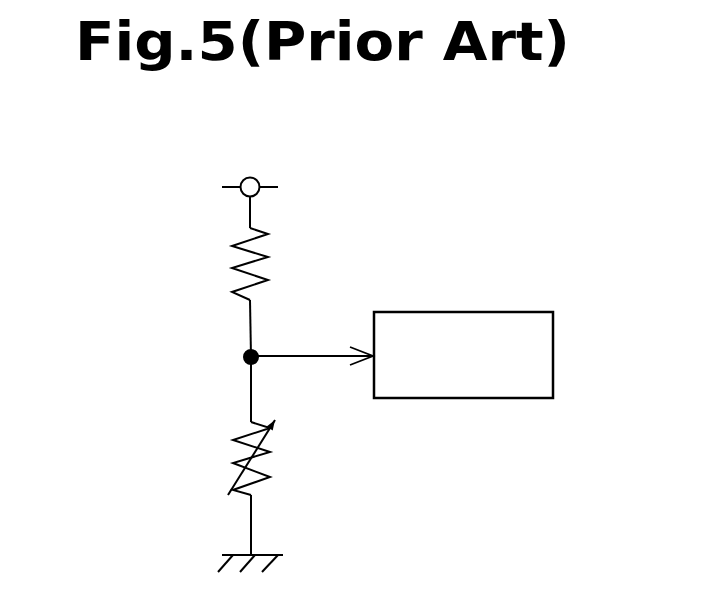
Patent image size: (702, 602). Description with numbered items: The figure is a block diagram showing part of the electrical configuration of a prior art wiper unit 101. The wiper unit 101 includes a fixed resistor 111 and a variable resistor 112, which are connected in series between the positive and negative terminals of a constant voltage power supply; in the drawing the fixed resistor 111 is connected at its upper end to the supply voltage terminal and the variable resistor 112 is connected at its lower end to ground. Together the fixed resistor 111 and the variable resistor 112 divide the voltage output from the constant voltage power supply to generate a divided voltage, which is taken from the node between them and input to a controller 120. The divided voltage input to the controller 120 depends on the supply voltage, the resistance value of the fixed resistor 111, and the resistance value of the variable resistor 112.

The wiper unit 101 is at (413, 178).
The fixed resistor 111 is at (257, 252).
The variable resistor 112 is at (258, 468).
The controller 120 is at (482, 312).